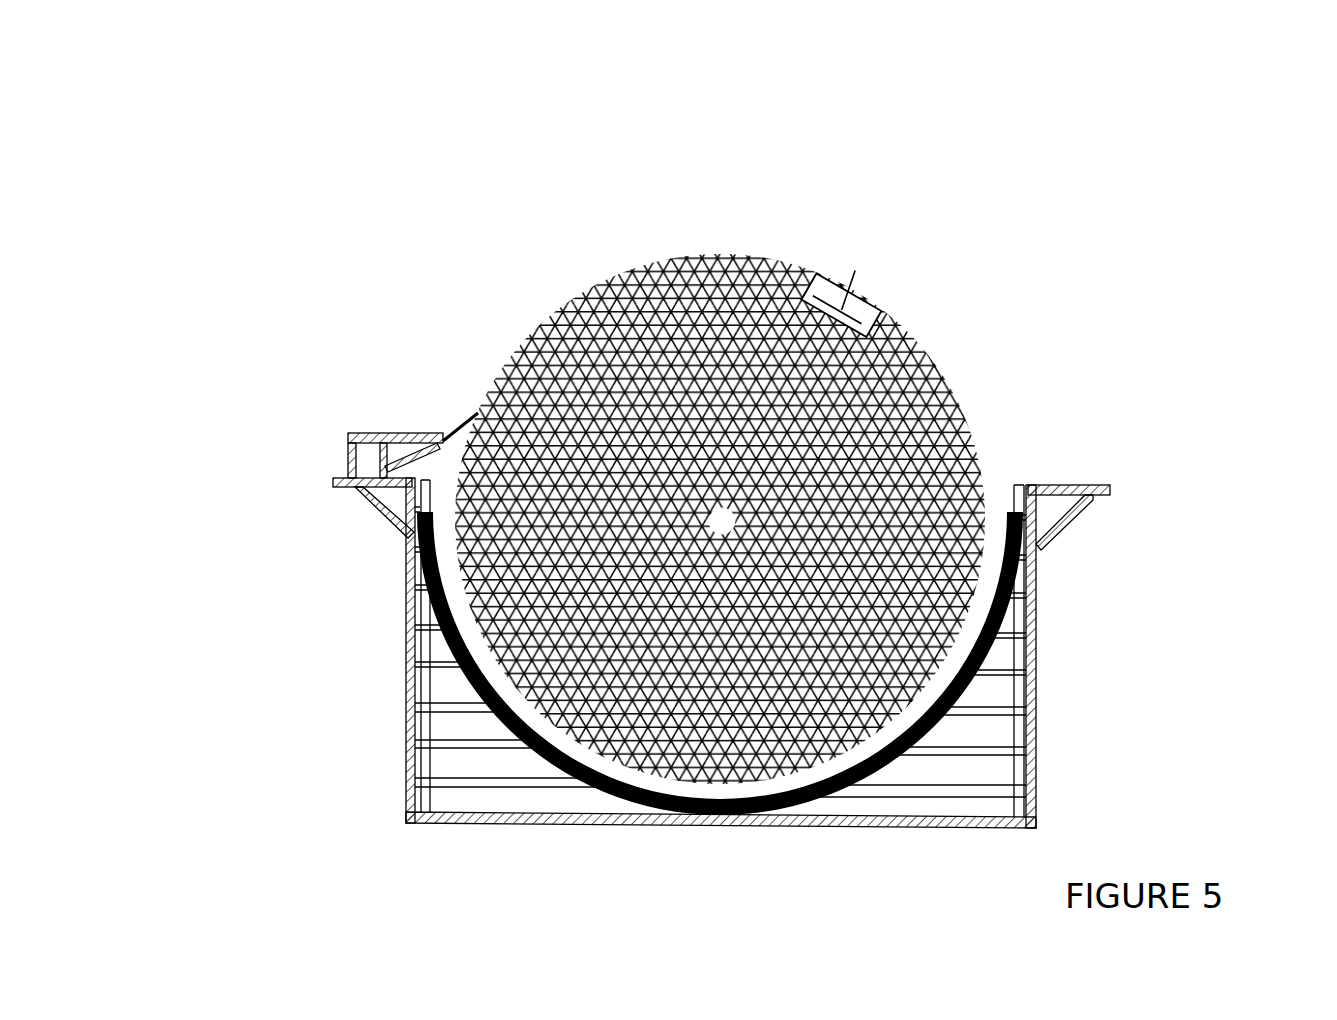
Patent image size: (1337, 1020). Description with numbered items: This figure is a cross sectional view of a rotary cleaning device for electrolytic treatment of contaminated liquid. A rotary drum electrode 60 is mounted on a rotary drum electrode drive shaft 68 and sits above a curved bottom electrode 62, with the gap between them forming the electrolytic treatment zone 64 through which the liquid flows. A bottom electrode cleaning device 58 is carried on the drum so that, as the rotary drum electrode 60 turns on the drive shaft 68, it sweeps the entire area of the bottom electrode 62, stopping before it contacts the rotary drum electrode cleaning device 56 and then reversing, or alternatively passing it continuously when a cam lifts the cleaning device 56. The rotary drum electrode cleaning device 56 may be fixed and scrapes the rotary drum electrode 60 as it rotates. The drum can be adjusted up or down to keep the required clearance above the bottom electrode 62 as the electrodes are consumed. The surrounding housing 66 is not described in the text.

The rotary drum electrode cleaning device 56 is at (455, 420).
The bottom electrode cleaning device 58 is at (862, 258).
The rotary drum electrode 60 is at (593, 301).
The bottom electrode 62 is at (1012, 600).
The electrolytic treatment zone 64 is at (493, 660).
The insulated tub 66 is at (973, 773).
The rotary drum electrode drive shaft 68 is at (730, 513).